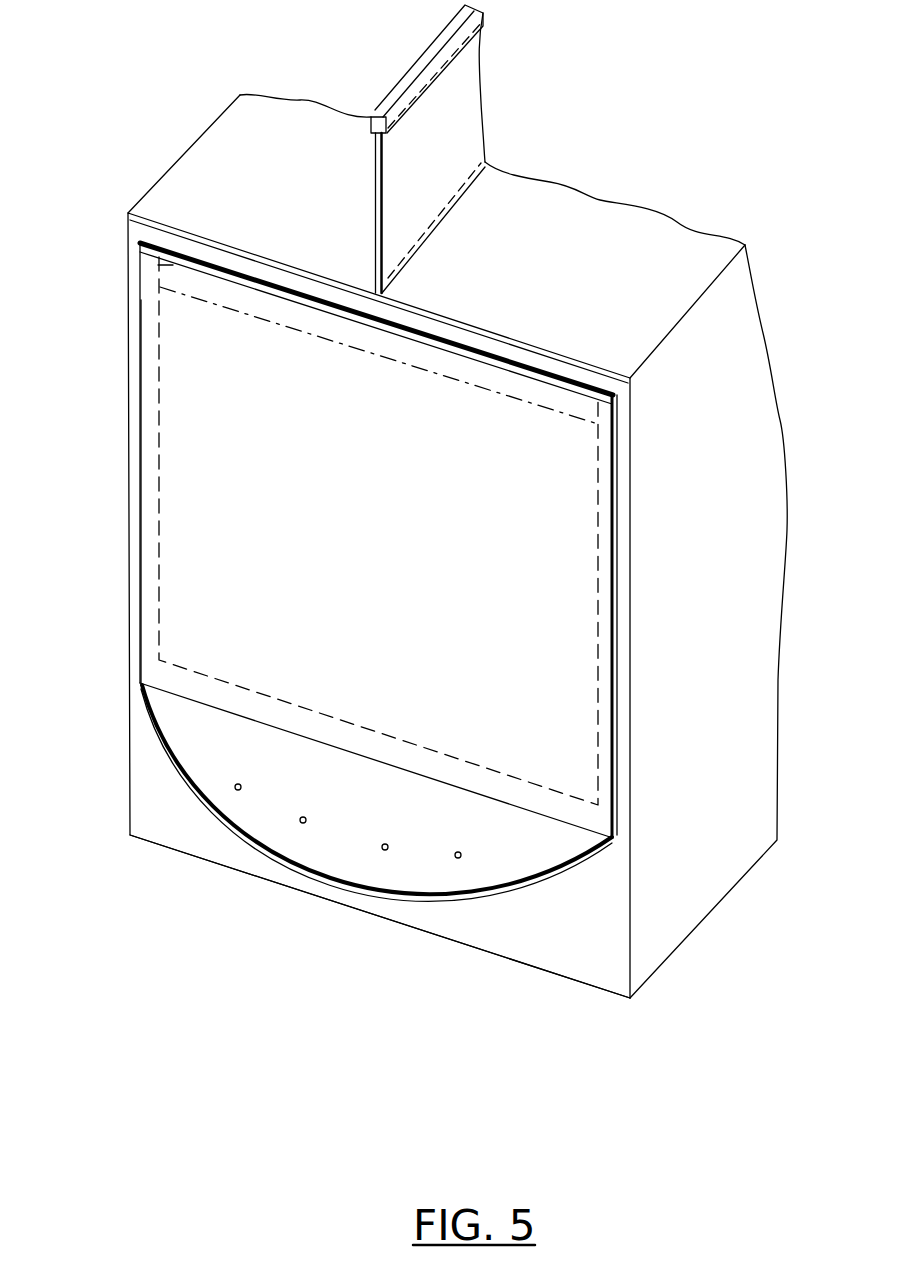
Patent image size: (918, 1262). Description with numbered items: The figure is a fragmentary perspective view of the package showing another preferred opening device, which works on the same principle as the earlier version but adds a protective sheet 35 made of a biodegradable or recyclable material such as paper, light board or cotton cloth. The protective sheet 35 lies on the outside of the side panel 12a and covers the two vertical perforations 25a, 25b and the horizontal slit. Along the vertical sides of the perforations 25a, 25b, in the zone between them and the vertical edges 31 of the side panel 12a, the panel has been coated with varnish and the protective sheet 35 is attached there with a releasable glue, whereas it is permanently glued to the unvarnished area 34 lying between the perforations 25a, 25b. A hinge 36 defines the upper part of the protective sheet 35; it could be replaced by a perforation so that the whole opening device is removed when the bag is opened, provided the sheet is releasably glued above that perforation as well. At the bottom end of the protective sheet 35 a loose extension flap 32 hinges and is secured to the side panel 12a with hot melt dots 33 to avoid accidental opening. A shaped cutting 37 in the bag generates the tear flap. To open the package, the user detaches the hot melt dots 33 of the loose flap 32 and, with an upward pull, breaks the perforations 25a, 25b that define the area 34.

The side panel 12a is at (545, 958).
The vertical perforation 25a is at (148, 572).
The vertical perforation 25b is at (612, 612).
The vertical edges of the side panel 31 is at (130, 787).
The loose extension flap 32 is at (350, 860).
The hot melt dots 33 is at (240, 790).
The unvarnished area 34 is at (212, 466).
The protective sheet 35 is at (173, 267).
The hinge 36 is at (178, 294).
The shaped cutting 37 is at (393, 895).